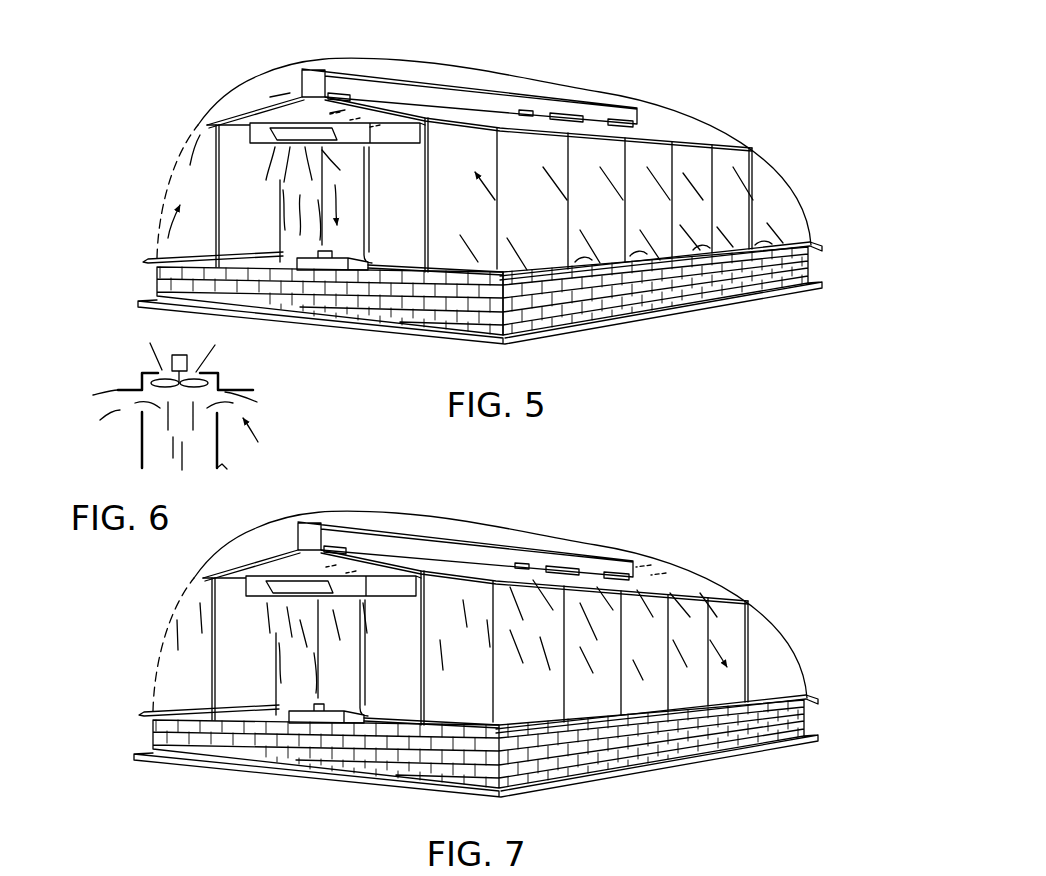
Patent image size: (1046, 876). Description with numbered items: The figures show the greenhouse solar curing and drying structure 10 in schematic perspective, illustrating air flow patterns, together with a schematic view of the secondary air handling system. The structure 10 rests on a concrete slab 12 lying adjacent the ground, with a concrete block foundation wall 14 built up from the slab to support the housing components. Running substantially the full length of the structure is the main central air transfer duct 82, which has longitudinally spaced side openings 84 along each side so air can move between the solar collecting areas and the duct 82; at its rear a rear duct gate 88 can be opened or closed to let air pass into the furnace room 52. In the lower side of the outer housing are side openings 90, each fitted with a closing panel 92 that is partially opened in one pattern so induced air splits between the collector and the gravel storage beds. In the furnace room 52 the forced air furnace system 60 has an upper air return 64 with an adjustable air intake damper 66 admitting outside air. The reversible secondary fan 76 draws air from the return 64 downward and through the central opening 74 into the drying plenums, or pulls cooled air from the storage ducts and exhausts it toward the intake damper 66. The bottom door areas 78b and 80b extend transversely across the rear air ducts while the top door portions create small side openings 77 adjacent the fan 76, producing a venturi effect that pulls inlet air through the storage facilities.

In FIG. 5, the solar curing and drying structure 10 is at (682, 67).
In FIG. 7, the solar curing and drying structure 10 is at (480, 598).
In FIG. 5, the concrete slab 12 is at (663, 312).
In FIG. 7, the concrete slab 12 is at (476, 784).
In FIG. 5, the concrete block foundation wall 14 is at (819, 268).
In FIG. 7, the concrete block foundation wall 14 is at (530, 731).
In FIG. 5, the furnace room 52 is at (245, 189).
In FIG. 5, the forced air furnace system 60 is at (378, 219).
In FIG. 7, the forced air furnace system 60 is at (337, 717).
In FIG. 5, the upper air return assembly 64 is at (263, 128).
In FIG. 7, the upper air return assembly 64 is at (266, 584).
In FIG. 5, the adjustable air intake damper 66 is at (293, 72).
In FIG. 7, the adjustable air intake damper 66 is at (258, 559).
In FIG. 6, the central opening 74 is at (207, 447).
In FIG. 5, the reversible power fan assembly 76 is at (310, 265).
In FIG. 6, the reversible power fan assembly 76 is at (240, 370).
In FIG. 7, the reversible power fan assembly 76 is at (290, 769).
In FIG. 6, the side openings 77 is at (93, 395).
In FIG. 6, the bottom door area 78b is at (133, 448).
In FIG. 6, the bottom door area 80b is at (219, 467).
In FIG. 5, the main central air transfer duct 82 is at (588, 93).
In FIG. 7, the main central air transfer duct 82 is at (482, 518).
In FIG. 5, the side openings 84 is at (344, 96).
In FIG. 7, the side openings 84 is at (484, 526).
In FIG. 5, the rear duct gate 88 is at (403, 113).
In FIG. 5, the side openings 90 is at (510, 300).
In FIG. 5, the closing panel 92 is at (755, 247).
In FIG. 7, the closing panel 92 is at (657, 757).